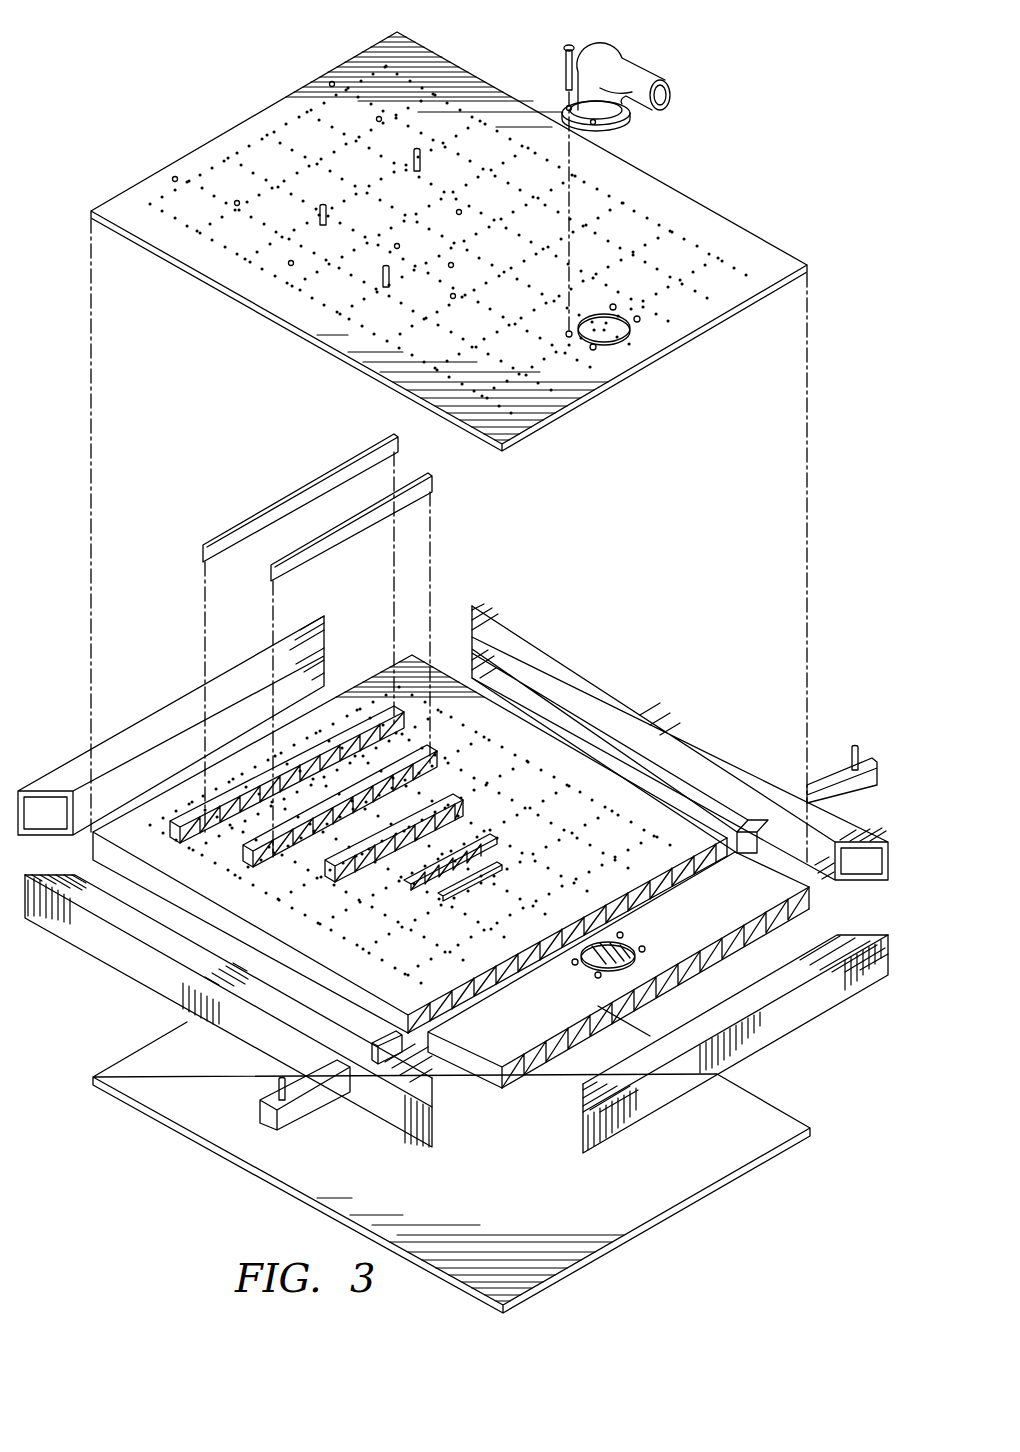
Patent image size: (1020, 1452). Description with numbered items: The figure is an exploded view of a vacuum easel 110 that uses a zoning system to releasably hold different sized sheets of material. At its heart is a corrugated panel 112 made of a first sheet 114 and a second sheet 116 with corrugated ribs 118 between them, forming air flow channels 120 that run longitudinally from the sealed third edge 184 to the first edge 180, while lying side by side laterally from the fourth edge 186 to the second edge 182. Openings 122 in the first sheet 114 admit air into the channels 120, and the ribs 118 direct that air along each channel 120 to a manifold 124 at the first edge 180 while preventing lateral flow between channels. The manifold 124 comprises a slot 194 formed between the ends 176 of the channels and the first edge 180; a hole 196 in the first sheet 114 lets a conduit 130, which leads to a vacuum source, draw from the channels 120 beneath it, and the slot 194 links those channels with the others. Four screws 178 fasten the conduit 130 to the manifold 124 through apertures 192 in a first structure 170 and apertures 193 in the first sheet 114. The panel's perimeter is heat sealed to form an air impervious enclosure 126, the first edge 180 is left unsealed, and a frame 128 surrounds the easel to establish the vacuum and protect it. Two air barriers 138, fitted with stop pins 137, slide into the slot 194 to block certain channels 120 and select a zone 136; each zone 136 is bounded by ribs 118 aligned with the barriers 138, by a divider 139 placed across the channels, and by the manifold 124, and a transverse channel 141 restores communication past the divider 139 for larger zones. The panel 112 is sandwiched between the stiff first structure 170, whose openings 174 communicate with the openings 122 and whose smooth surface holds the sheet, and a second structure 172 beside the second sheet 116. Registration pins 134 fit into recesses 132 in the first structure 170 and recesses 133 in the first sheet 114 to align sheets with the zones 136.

The vacuum easel 110 is at (137, 131).
The corrugated panel 112 is at (583, 760).
The first sheet 114 is at (167, 809).
The second sheet 116 is at (186, 913).
The corrugated ribs 118 is at (567, 945).
The air flow channels 120 is at (542, 958).
The openings 122 is at (603, 845).
The manifold 124 is at (727, 853).
The air impervious enclosure 126 is at (302, 975).
The frame 128 is at (678, 728).
The conduit 130 is at (678, 82).
The recesses 132 is at (453, 295).
The recesses 133 is at (454, 920).
The registration pins 134 is at (386, 263).
The zones 136 is at (511, 280).
The stop pins 137 is at (854, 744).
The air barriers 138 is at (868, 760).
The divider 139 is at (309, 541).
The transverse channel 141 is at (473, 833).
The first structure 170 is at (751, 242).
The second structure 172 is at (785, 1125).
The openings 174 is at (234, 154).
The ends 176 is at (713, 865).
The screws 178 is at (568, 44).
The first edge 180 is at (765, 940).
The second edge 182 is at (488, 705).
The third edge 184 is at (369, 675).
The fourth edge 186 is at (123, 867).
The apertures 192 is at (637, 319).
The apertures 193 is at (642, 949).
The slot 194 is at (420, 1027).
The hole 196 is at (612, 968).